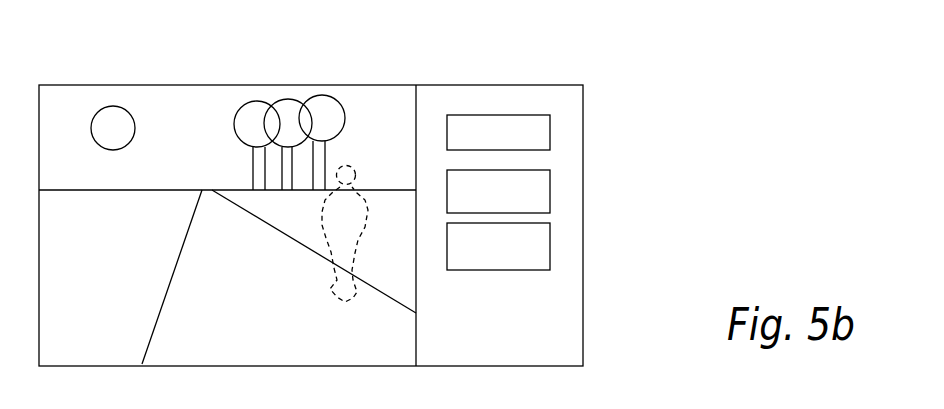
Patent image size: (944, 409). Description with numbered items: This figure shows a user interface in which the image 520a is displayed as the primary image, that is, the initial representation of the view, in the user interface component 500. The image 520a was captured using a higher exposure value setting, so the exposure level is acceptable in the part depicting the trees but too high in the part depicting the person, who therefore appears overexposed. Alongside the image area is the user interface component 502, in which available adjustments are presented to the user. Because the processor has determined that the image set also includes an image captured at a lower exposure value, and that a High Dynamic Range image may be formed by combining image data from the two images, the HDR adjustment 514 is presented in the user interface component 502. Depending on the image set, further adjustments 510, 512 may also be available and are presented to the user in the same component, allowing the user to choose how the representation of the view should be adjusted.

The user interface component 500 is at (193, 85).
The user interface component 502 is at (498, 85).
The adjustment 510 is at (550, 170).
The adjustment 512 is at (550, 223).
The HDR adjustment 514 is at (550, 115).
The image 520a is at (295, 338).